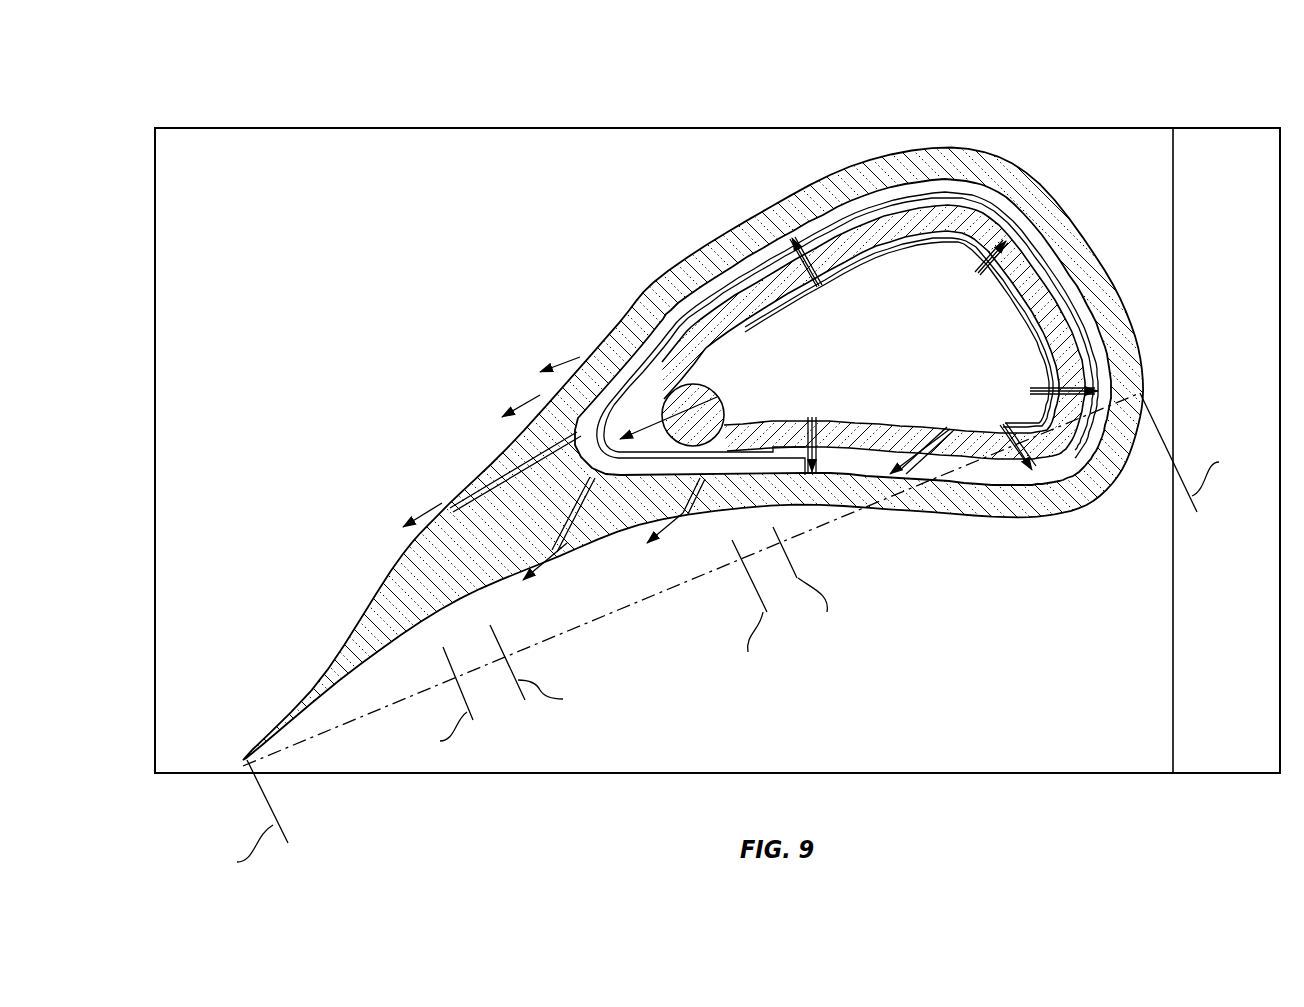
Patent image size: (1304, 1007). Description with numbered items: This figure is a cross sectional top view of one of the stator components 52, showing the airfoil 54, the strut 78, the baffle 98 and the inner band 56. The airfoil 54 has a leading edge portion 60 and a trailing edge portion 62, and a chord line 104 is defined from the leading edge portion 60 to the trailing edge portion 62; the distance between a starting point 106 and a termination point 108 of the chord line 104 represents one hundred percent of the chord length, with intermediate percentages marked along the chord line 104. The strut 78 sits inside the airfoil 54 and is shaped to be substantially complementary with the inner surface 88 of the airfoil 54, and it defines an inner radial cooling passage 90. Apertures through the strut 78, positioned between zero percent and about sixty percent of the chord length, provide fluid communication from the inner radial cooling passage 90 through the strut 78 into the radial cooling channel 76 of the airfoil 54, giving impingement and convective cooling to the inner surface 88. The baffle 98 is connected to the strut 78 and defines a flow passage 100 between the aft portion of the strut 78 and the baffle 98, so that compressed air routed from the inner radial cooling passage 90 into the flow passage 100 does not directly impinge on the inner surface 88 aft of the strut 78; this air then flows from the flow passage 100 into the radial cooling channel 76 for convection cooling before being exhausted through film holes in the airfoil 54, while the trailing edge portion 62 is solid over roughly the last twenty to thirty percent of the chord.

The stator component 52 is at (972, 82).
The airfoil 54 is at (1056, 240).
The inner band 56 is at (540, 170).
The leading edge portion 60 is at (1152, 387).
The trailing edge portion 62 is at (232, 745).
The radial cooling channel 76 is at (577, 443).
The strut 78 is at (714, 280).
The inner surface 88 is at (997, 227).
The inner radial cooling passage 90 is at (916, 377).
The baffle 98 is at (594, 432).
The flow passage 100 is at (660, 437).
The chord line 104 is at (650, 607).
The starting point 106 is at (1150, 395).
The termination point 108 is at (240, 767).